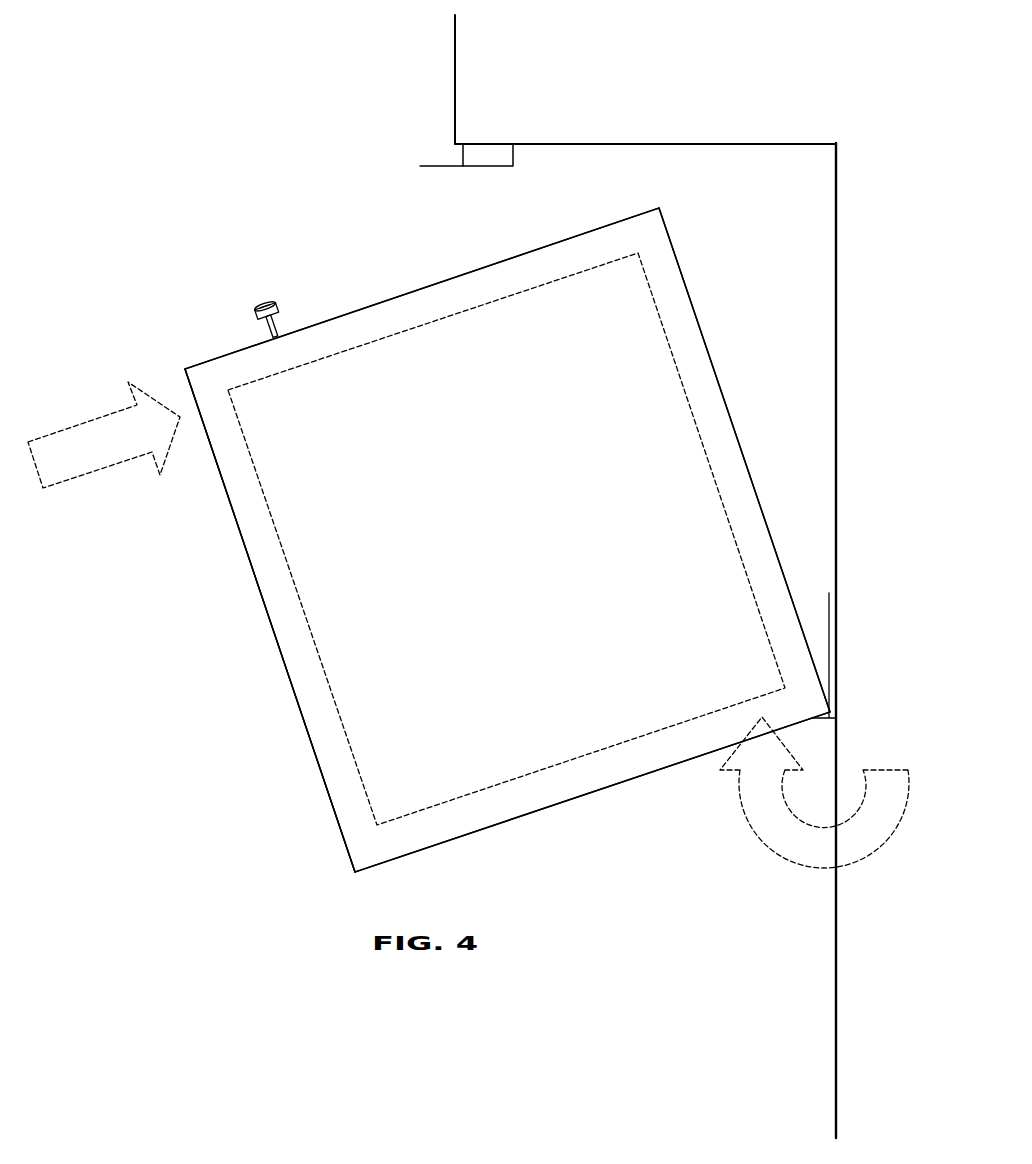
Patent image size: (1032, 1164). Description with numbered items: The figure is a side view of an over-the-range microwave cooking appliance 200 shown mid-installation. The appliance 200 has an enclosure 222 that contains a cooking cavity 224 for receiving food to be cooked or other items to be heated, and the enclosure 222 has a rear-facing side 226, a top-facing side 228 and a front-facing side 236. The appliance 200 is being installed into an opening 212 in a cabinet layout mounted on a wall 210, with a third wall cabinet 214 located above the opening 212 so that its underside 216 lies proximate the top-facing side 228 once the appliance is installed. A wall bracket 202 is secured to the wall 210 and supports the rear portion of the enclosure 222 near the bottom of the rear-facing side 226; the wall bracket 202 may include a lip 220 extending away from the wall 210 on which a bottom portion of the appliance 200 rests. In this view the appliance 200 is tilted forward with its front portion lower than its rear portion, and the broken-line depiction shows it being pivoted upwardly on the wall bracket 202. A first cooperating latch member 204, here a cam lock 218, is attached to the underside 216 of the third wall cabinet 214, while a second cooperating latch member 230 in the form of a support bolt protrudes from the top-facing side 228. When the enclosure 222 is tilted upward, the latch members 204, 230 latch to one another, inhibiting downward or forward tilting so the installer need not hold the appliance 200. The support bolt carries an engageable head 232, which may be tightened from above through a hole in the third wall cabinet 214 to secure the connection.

The over-the-range microwave cooking appliance 200 is at (145, 309).
The wall bracket 202 is at (830, 602).
The first cooperating latch member 204 is at (520, 163).
The wall 210 is at (837, 280).
The opening 212 is at (773, 267).
The third wall cabinet 214 is at (555, 87).
The underside 216 is at (717, 142).
The cam lock 218 is at (434, 166).
The lip 220 is at (818, 720).
The enclosure 222 is at (283, 662).
The cooking cavity 224 is at (347, 743).
The rear-facing side 226 is at (743, 455).
The top-facing side 228 is at (383, 302).
The second cooperating latch member 230 is at (277, 330).
The engageable head 232 is at (267, 304).
The front-facing side 236 is at (252, 560).